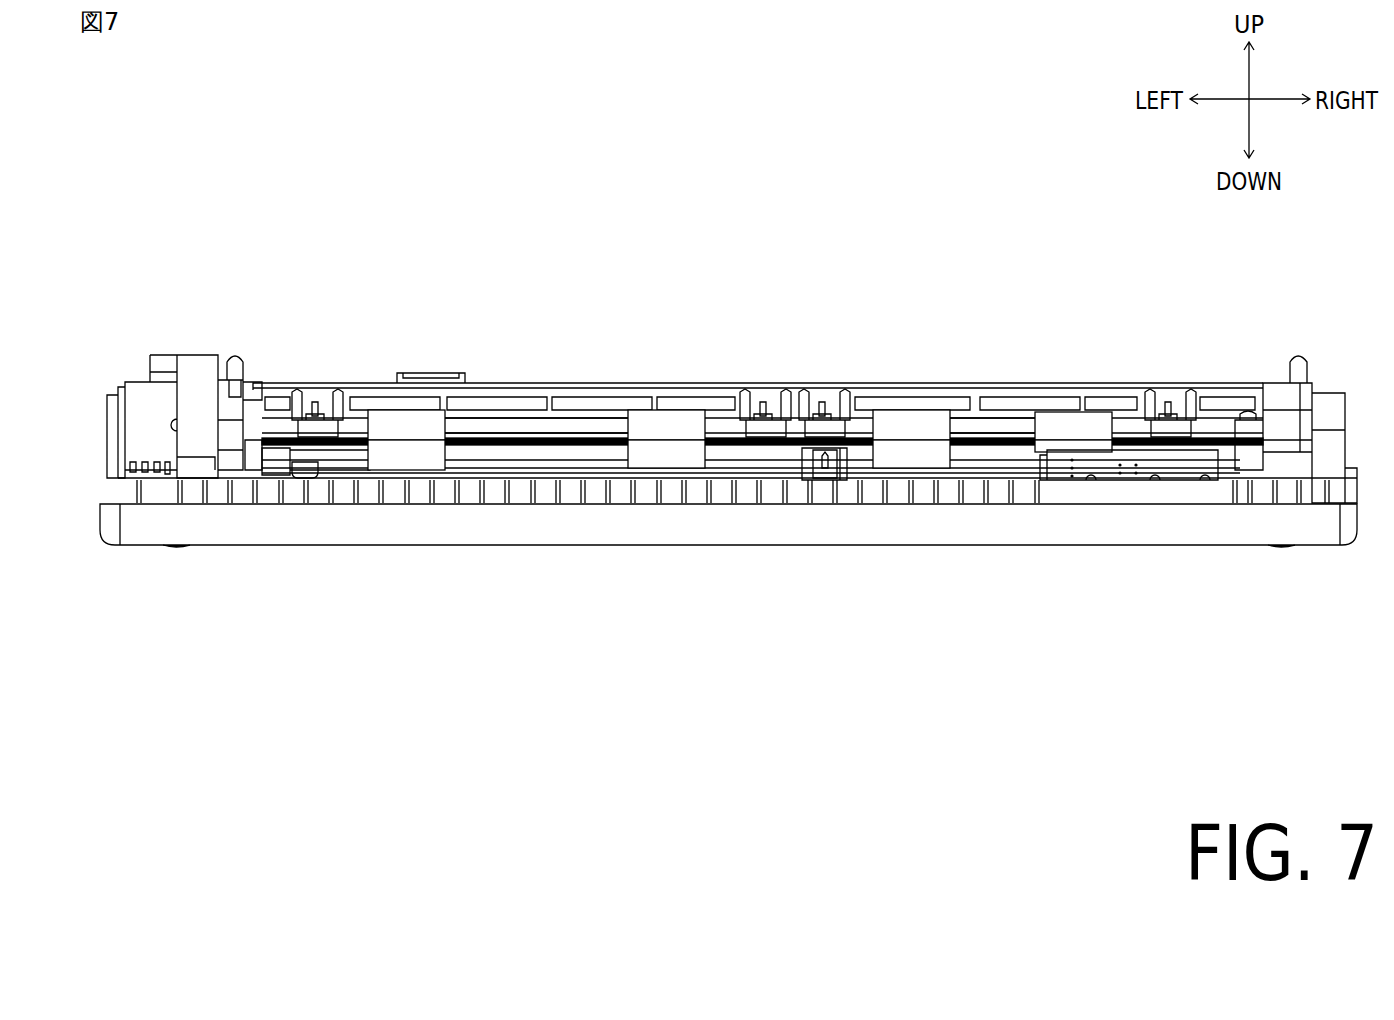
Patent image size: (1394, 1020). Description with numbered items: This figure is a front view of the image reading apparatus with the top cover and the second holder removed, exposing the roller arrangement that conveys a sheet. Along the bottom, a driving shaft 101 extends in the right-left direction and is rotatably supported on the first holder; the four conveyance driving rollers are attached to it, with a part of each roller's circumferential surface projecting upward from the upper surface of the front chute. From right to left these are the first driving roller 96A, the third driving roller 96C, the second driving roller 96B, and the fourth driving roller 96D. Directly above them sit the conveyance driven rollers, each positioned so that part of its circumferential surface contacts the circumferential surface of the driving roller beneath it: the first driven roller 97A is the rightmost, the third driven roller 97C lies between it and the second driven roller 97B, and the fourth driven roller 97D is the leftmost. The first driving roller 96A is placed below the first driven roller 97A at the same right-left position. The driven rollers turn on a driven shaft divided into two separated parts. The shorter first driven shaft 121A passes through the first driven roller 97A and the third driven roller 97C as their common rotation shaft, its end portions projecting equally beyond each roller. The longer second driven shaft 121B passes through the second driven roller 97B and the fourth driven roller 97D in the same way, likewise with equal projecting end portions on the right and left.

The first driven roller 97A is at (1090, 420).
The second driven roller 97B is at (682, 420).
The third driven roller 97C is at (917, 420).
The fourth driven roller 97D is at (407, 422).
The first driving roller 96A is at (1042, 458).
The second driving roller 96B is at (685, 461).
The third driving roller 96C is at (917, 458).
The fourth driving roller 96D is at (405, 461).
The first driven shaft 121A is at (997, 422).
The second driven shaft 121B is at (535, 425).
The driving shaft 101 is at (538, 456).